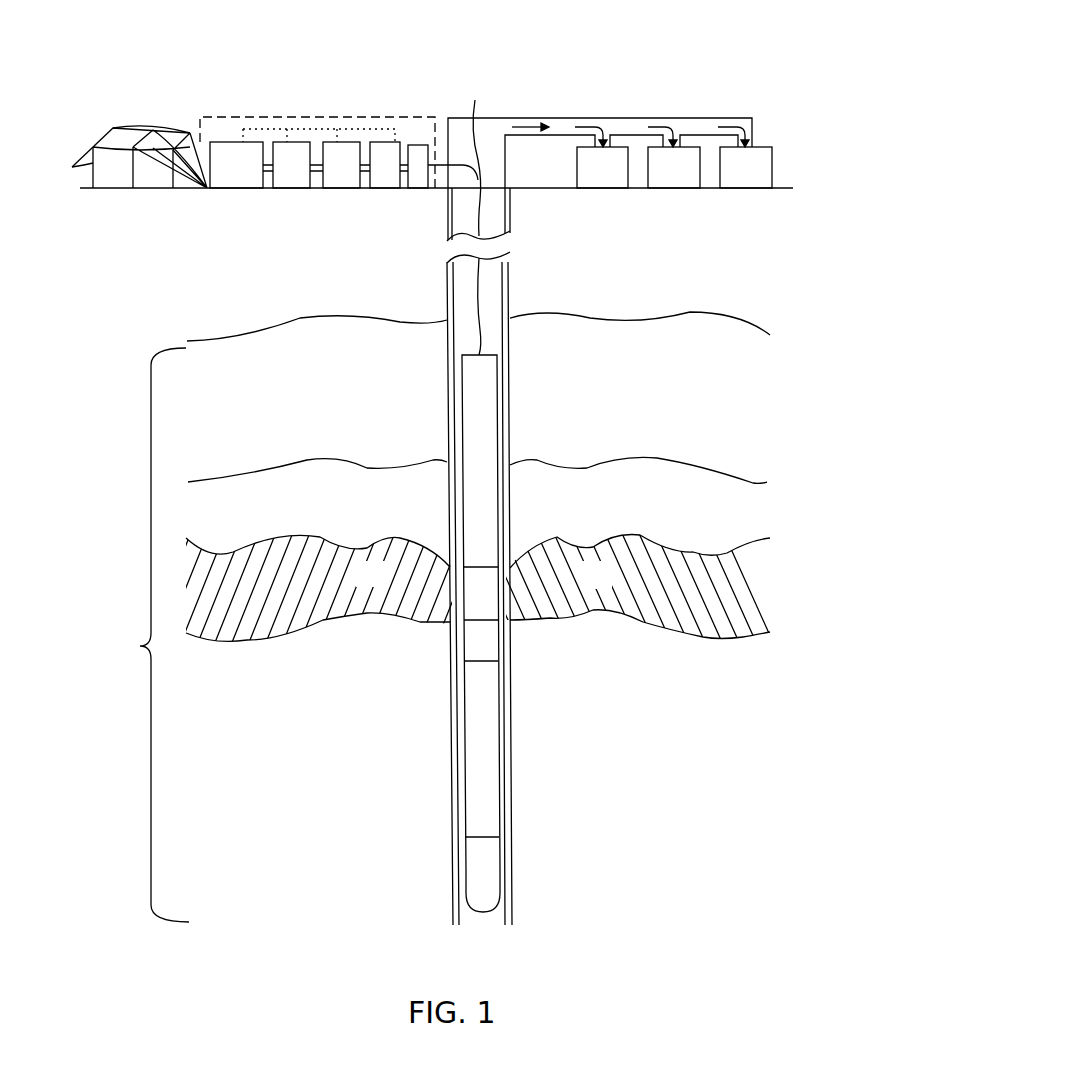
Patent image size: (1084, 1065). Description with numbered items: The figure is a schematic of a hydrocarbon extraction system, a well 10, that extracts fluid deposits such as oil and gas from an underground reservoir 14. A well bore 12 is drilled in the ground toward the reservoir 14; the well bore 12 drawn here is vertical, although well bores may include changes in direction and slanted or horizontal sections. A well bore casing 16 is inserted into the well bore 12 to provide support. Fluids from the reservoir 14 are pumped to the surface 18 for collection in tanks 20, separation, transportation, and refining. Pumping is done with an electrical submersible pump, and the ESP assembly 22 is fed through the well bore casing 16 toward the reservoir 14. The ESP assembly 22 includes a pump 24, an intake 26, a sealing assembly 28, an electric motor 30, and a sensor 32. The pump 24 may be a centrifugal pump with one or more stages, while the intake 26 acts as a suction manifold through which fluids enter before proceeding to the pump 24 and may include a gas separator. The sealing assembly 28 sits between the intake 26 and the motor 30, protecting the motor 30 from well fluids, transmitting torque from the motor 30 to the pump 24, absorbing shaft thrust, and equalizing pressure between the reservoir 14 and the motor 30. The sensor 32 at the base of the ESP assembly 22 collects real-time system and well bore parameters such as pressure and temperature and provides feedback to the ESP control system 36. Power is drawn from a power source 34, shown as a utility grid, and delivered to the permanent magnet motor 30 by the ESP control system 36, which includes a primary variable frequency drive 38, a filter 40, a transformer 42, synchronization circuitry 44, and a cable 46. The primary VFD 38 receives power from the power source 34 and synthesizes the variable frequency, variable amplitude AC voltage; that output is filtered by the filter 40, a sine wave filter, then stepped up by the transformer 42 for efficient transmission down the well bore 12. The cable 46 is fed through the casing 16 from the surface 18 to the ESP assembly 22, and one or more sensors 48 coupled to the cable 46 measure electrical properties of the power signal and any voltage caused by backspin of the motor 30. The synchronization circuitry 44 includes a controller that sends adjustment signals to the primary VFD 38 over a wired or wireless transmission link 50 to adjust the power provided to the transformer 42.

The well 10 is at (583, 41).
The well bore 12 is at (501, 325).
The underground reservoir 14 is at (384, 583).
The well bore casing 16 is at (447, 287).
The surface 18 is at (535, 186).
The tanks 20 is at (747, 218).
The ESP assembly 22 is at (140, 646).
The pump 24 is at (497, 388).
The intake 26 is at (463, 594).
The sealing assembly 28 is at (464, 642).
The electric motor 30 is at (500, 725).
The sensor 32 is at (500, 866).
The power source 34 is at (161, 110).
The ESP control system 36 is at (393, 115).
The primary variable frequency drive 38 is at (223, 180).
The filter 40 is at (288, 189).
The transformer 42 is at (341, 189).
The synchronization circuitry 44 is at (383, 189).
The cable 46 is at (455, 215).
The sensors 48 is at (418, 142).
The transmission link 50 is at (314, 116).